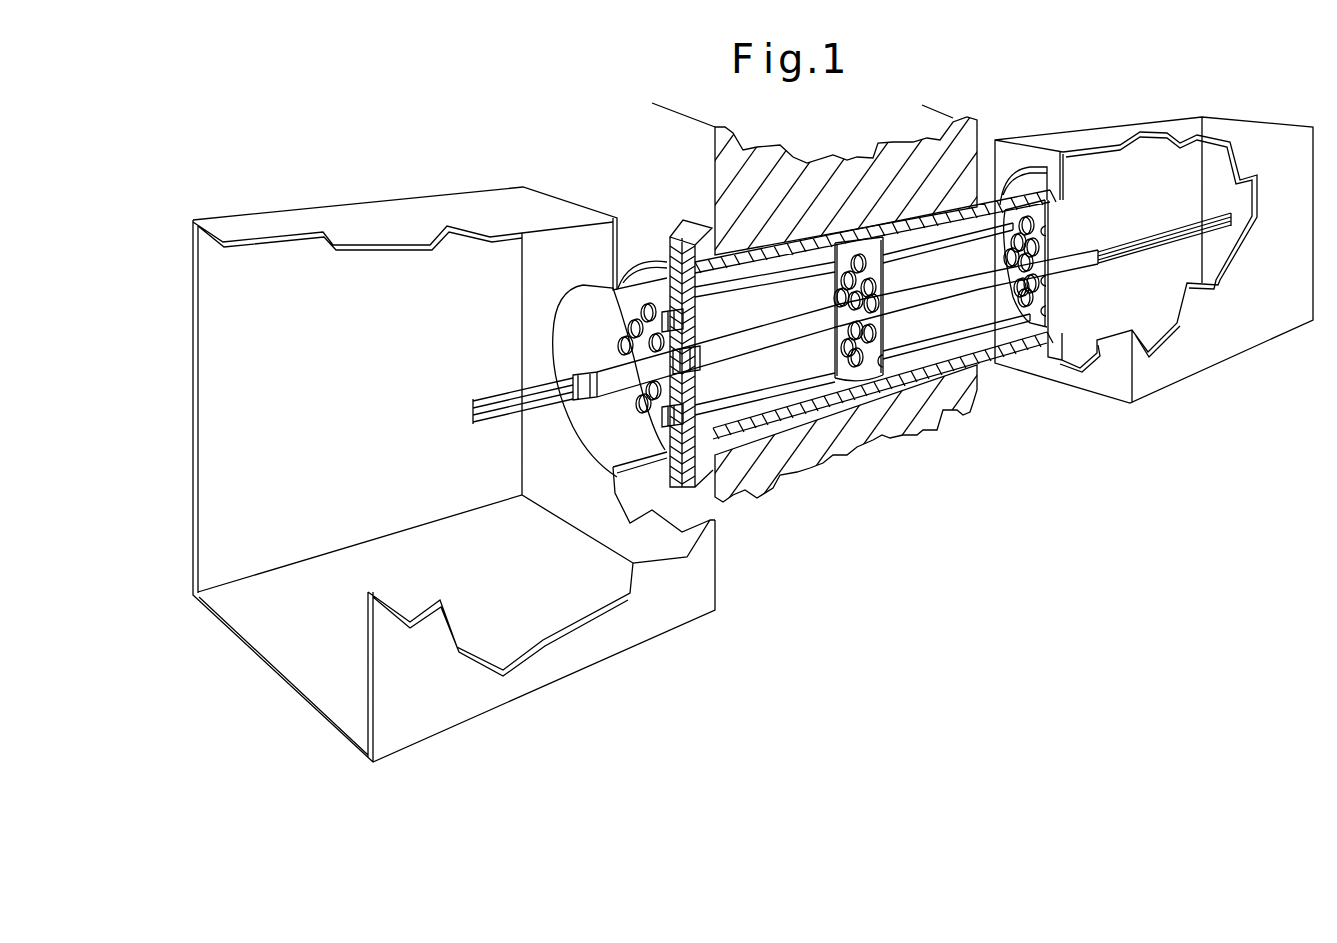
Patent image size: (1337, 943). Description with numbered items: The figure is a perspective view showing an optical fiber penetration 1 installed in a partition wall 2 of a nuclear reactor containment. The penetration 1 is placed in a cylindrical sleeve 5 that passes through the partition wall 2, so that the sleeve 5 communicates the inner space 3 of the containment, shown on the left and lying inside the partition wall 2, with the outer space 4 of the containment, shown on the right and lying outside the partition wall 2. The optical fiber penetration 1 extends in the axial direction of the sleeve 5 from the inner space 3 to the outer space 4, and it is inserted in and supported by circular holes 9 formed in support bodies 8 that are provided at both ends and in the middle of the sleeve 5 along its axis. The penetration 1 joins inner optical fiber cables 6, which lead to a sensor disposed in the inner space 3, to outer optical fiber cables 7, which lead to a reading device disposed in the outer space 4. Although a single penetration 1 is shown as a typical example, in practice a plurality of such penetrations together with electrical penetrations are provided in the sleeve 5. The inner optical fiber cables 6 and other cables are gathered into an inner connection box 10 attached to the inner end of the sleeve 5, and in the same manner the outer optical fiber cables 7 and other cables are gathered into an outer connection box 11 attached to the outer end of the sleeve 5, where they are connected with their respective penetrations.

The optical fiber penetration 1 is at (956, 318).
The partition wall 2 is at (977, 120).
The inner space 3 is at (447, 106).
The outer space 4 is at (1118, 47).
The cylindrical sleeve 5 is at (797, 412).
The inner optical fiber cables 6 is at (497, 395).
The outer optical fiber cables 7 is at (1135, 240).
The support bodies 8 is at (875, 370).
The circular holes 9 is at (890, 300).
The inner connection box 10 is at (385, 270).
The outer connection box 11 is at (1155, 152).